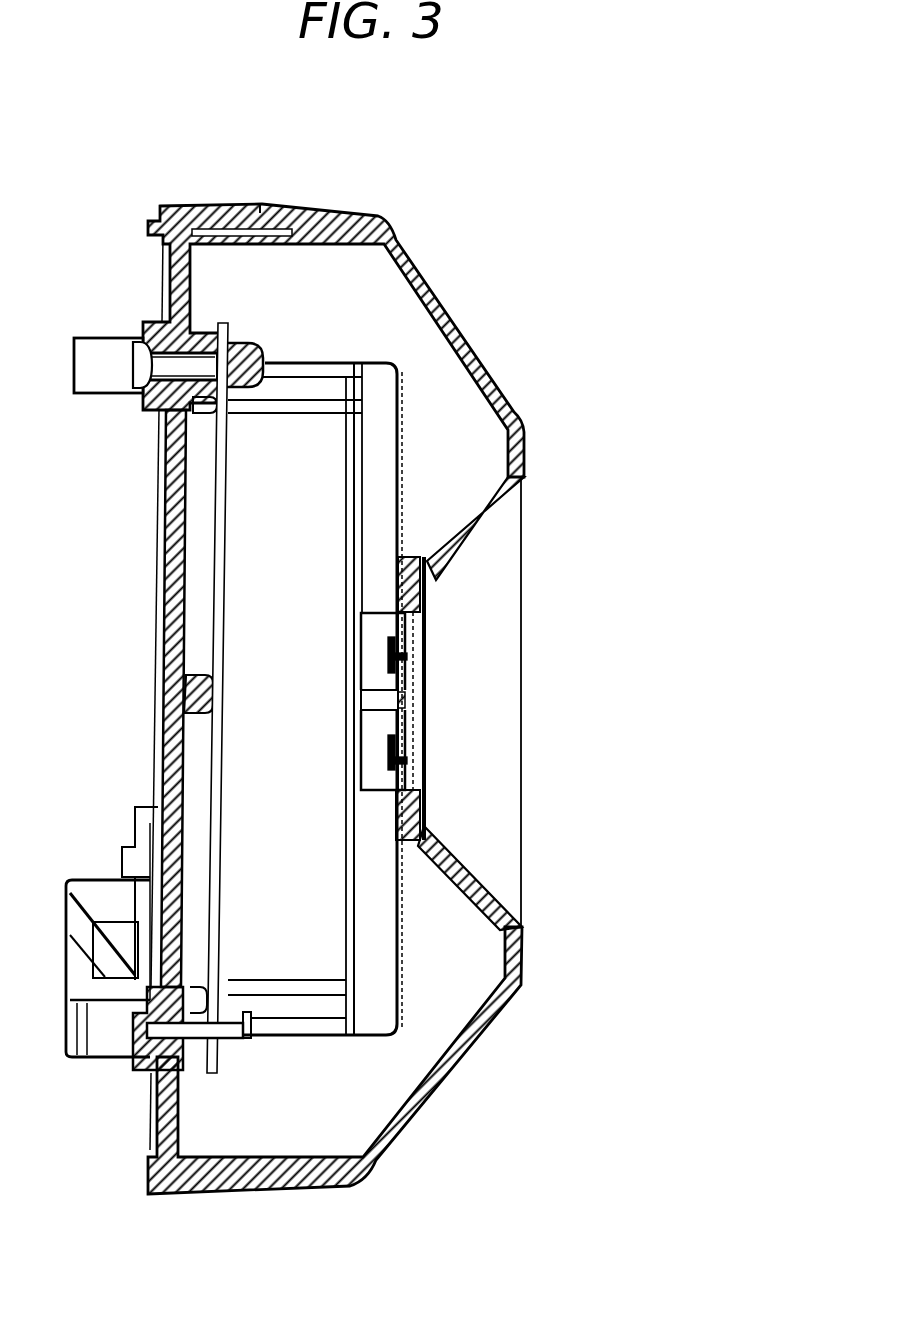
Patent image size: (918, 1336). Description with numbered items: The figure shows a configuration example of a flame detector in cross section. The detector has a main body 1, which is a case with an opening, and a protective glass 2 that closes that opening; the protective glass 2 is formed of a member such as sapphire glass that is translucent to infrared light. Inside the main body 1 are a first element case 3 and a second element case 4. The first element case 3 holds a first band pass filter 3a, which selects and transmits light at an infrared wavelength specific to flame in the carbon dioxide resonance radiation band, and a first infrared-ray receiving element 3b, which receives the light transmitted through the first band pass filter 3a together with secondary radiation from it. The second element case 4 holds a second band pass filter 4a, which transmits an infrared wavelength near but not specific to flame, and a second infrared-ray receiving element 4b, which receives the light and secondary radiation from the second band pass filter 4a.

The main body (case) 1 is at (466, 321).
The protective glass 2 is at (432, 598).
The first element case 3 is at (350, 614).
The first band pass filter 3a is at (408, 637).
The first infrared-ray receiving element 3b is at (397, 658).
The second element case 4 is at (350, 732).
The second band pass filter 4a is at (408, 744).
The second infrared-ray receiving element 4b is at (398, 758).